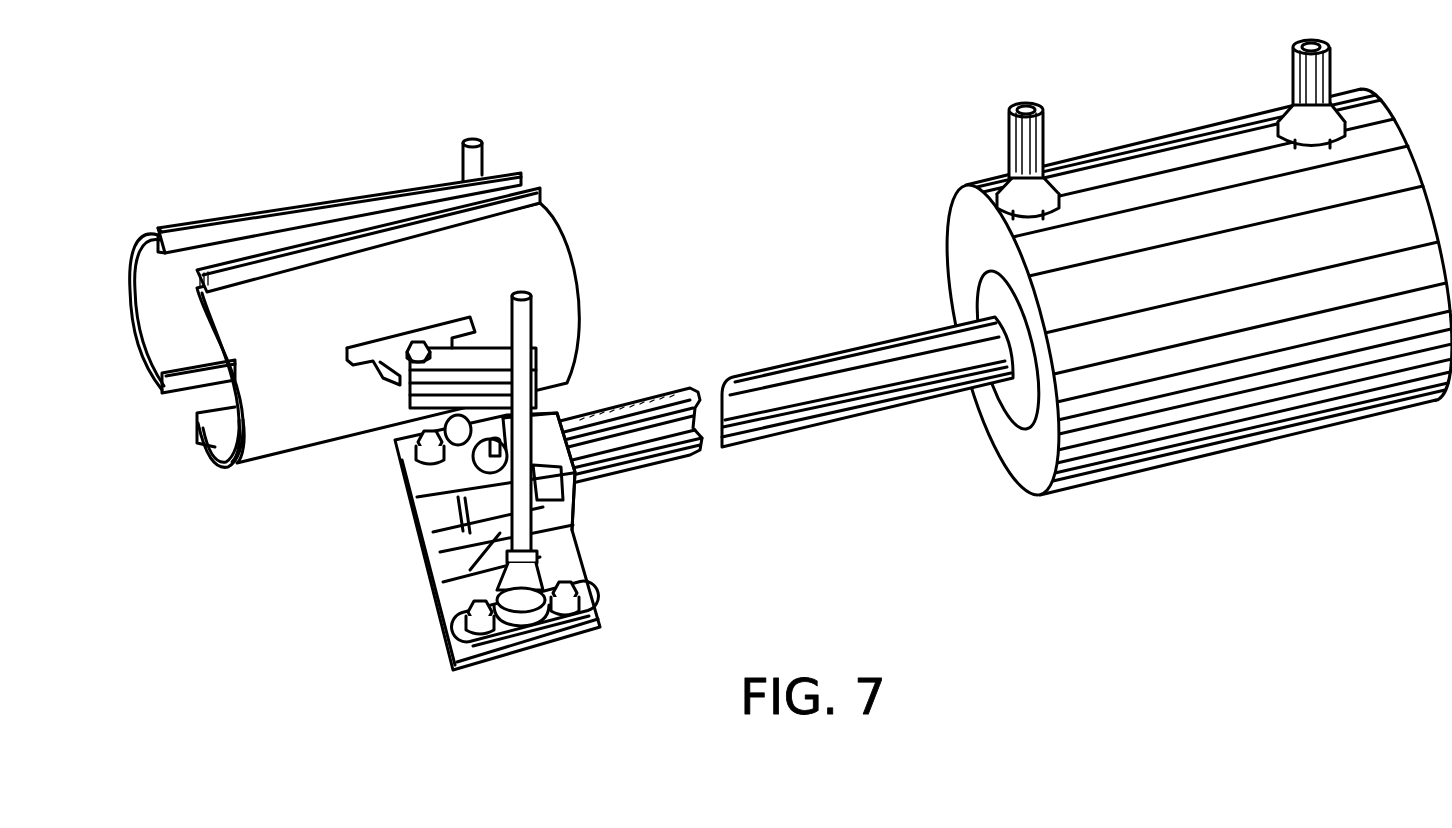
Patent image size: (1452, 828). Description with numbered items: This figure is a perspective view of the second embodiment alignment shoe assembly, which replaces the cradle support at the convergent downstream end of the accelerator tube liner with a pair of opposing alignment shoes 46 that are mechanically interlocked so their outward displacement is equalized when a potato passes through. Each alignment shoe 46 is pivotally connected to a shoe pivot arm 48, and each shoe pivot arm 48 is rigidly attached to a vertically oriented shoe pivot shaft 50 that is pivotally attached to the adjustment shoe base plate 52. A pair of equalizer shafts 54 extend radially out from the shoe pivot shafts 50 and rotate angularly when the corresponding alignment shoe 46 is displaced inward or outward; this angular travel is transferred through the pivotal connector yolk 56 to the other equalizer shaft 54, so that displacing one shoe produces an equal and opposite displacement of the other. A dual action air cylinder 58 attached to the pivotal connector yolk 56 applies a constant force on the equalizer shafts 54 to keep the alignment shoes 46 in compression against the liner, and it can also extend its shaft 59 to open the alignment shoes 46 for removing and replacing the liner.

The alignment shoe 46 is at (330, 317).
The shoe pivot arm 48 is at (405, 408).
The shoe pivot shaft 50 is at (483, 148).
The adjustment shoe base plate 52 is at (563, 587).
The equalizer shaft 54 is at (445, 588).
The pivotal connector yolk 56 is at (588, 485).
The dual action air cylinder 58 is at (1294, 262).
The shaft 59 is at (745, 372).